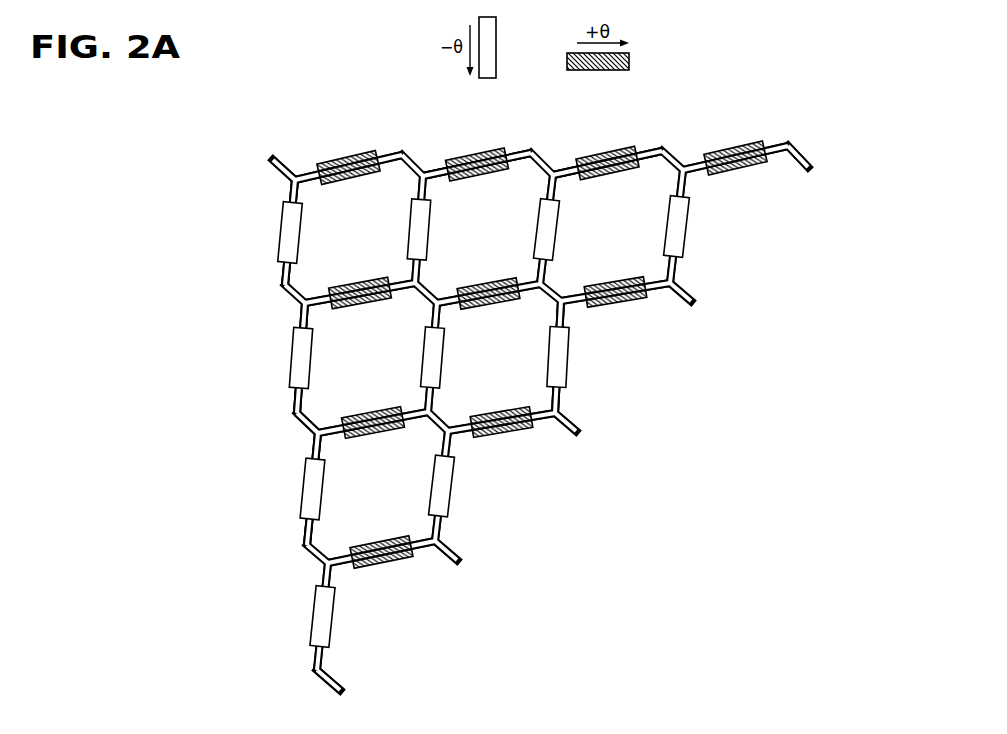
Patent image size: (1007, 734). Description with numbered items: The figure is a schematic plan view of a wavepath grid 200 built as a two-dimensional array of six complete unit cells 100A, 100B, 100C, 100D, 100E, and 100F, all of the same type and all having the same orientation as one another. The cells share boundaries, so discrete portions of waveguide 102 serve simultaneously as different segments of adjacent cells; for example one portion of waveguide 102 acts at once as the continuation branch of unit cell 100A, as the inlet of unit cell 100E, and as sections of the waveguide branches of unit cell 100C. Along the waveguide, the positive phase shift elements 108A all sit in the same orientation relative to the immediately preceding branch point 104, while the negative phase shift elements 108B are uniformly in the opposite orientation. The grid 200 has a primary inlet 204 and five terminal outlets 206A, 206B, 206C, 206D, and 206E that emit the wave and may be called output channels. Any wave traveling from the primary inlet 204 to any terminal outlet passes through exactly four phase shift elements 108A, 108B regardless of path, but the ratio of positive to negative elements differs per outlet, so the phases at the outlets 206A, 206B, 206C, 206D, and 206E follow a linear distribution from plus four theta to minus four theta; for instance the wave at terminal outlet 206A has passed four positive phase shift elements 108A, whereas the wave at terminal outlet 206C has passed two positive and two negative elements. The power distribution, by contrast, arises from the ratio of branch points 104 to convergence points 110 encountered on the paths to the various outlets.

The wavepath grid 200 is at (267, 530).
The primary inlet 204 is at (291, 176).
The terminal outlet 206A is at (811, 163).
The terminal outlet 206B is at (694, 297).
The terminal outlet 206C is at (579, 428).
The terminal outlet 206D is at (462, 556).
The terminal outlet 206E is at (343, 688).
The branch point 104 is at (301, 165).
The convergence point 110 is at (422, 175).
The positive phase shift element 108A is at (349, 157).
The negative phase shift element 108B is at (283, 233).
The waveguide 102 is at (305, 435).
The unit cell 100A is at (272, 247).
The unit cell 100B is at (506, 135).
The unit cell 100C is at (283, 357).
The unit cell 100D is at (644, 133).
The unit cell 100E is at (578, 371).
The unit cell 100F is at (297, 491).